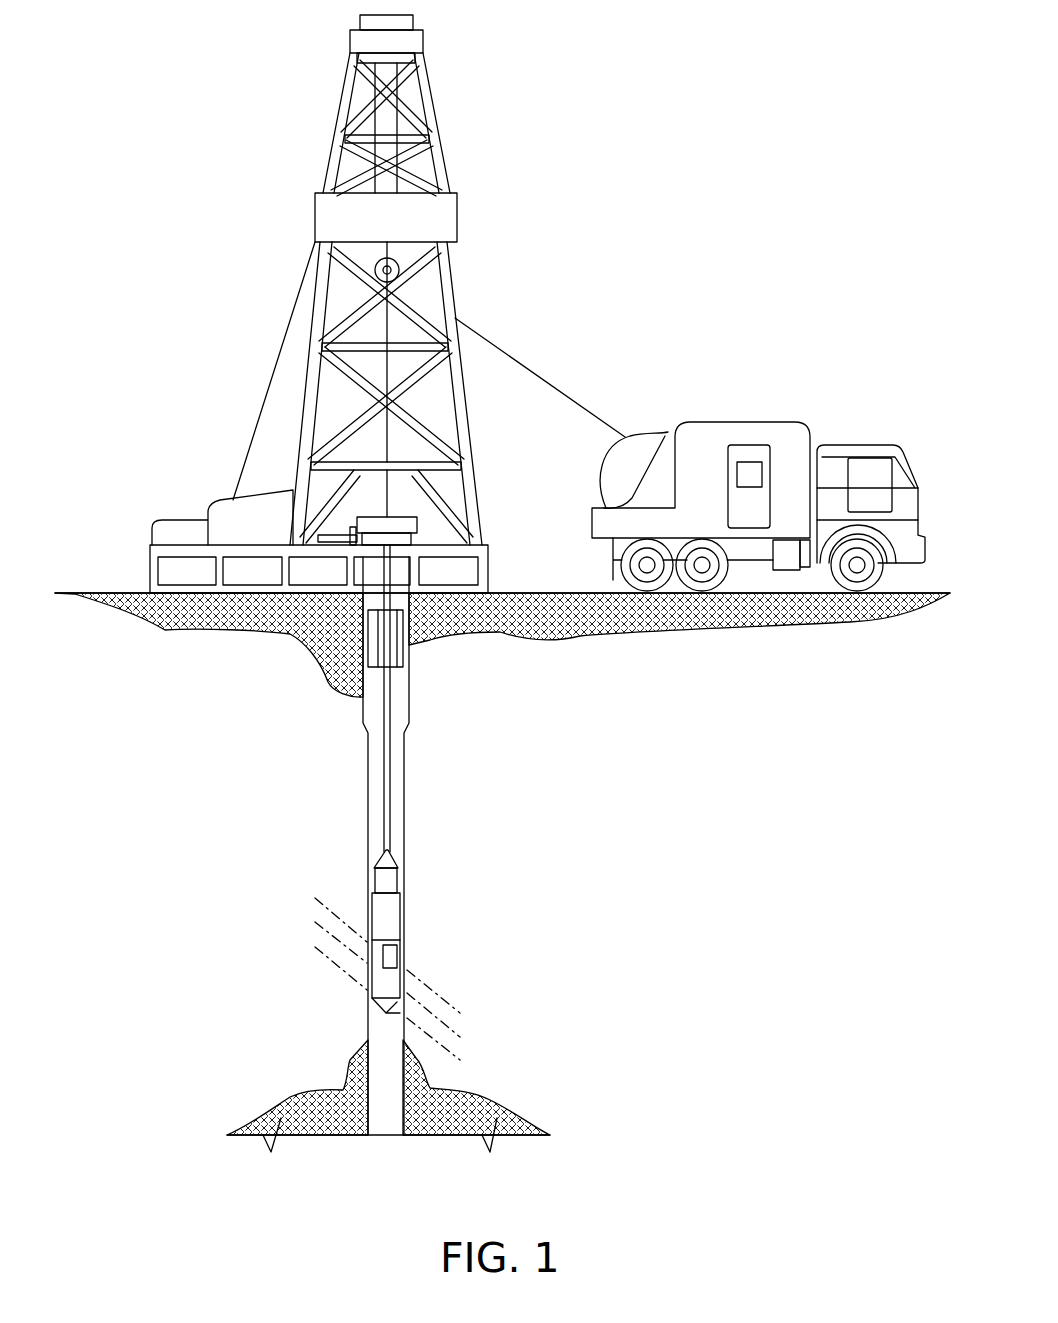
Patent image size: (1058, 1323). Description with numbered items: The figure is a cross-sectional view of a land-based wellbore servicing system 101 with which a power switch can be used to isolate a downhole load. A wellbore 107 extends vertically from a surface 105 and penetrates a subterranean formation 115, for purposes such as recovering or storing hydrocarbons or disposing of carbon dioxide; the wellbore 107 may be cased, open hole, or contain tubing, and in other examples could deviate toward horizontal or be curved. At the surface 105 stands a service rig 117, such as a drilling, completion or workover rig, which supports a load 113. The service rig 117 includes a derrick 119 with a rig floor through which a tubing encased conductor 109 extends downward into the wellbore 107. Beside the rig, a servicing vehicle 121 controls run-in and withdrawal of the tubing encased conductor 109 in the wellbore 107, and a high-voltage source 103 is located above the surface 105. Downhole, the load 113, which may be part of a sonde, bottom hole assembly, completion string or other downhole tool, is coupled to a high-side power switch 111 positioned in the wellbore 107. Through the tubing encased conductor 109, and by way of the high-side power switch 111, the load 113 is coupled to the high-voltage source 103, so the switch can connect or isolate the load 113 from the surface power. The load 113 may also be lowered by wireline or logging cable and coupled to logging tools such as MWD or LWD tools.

The wellbore servicing system 101 is at (680, 228).
The high-voltage source 103 is at (740, 432).
The surface 105 is at (105, 582).
The wellbore 107 is at (401, 712).
The tubing encased conductor 109 is at (385, 767).
The high-side power switch 111 is at (385, 957).
The load 113 is at (380, 982).
The subterranean formation 115 is at (465, 1107).
The service rig 117 is at (160, 340).
The derrick 119 is at (448, 298).
The servicing vehicle 121 is at (880, 450).